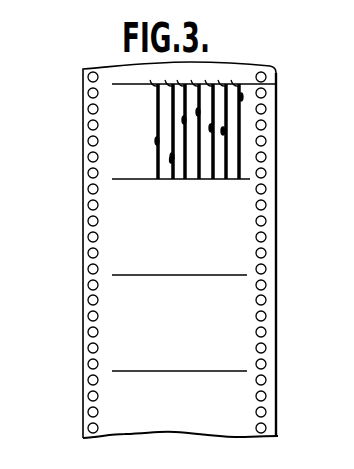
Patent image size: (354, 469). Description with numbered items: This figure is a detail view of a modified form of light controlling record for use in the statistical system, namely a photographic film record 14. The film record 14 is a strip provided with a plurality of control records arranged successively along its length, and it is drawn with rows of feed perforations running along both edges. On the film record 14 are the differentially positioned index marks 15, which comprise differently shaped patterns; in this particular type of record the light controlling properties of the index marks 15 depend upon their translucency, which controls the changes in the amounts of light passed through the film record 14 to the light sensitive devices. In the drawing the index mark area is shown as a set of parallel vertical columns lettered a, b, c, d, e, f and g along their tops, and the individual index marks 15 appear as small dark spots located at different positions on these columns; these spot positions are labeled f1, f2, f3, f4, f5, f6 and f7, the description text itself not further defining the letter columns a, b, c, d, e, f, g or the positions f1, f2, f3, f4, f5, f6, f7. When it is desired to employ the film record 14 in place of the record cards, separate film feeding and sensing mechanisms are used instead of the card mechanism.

The photographic film record 14 is at (83, 217).
The differentially positioned index marks 15 is at (171, 159).
The tap contact f1 is at (157, 142).
The tap contact f2 is at (170, 162).
The tap contact f3 is at (184, 120).
The tap contact f4 is at (198, 112).
The tap contact f5 is at (211, 130).
The tap contact f6 is at (224, 131).
The tap contact f7 is at (241, 97).
The conductor bar a is at (150, 125).
The conductor bar b is at (166, 125).
The conductor bar c is at (180, 125).
The conductor bar d is at (194, 125).
The conductor bar e is at (208, 125).
The conductor bar f is at (221, 125).
The conductor bar g is at (234, 125).